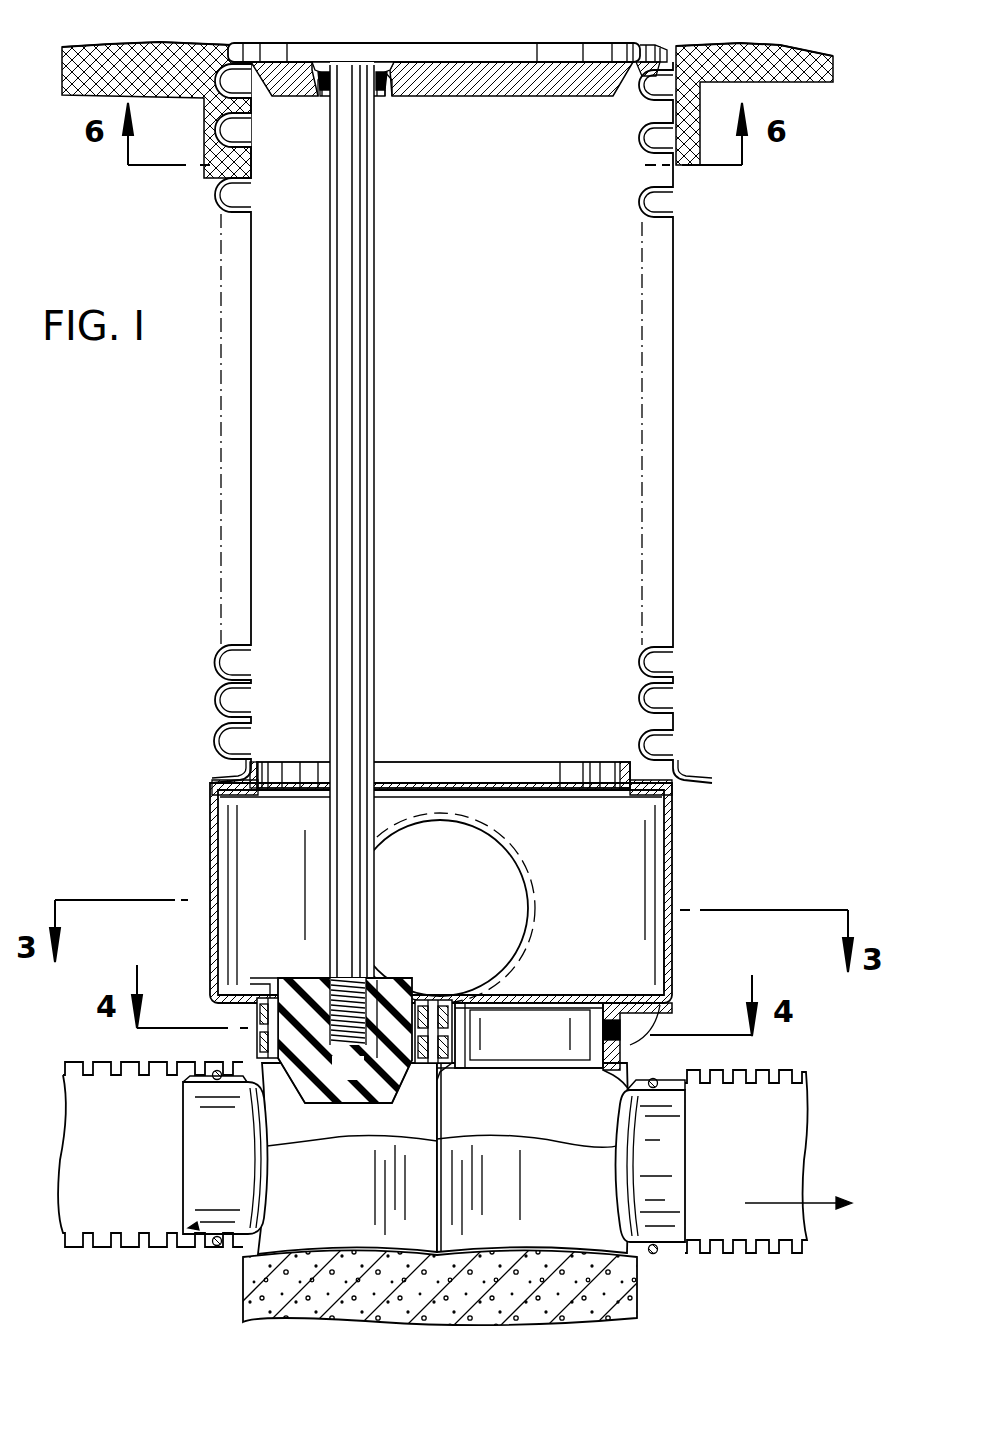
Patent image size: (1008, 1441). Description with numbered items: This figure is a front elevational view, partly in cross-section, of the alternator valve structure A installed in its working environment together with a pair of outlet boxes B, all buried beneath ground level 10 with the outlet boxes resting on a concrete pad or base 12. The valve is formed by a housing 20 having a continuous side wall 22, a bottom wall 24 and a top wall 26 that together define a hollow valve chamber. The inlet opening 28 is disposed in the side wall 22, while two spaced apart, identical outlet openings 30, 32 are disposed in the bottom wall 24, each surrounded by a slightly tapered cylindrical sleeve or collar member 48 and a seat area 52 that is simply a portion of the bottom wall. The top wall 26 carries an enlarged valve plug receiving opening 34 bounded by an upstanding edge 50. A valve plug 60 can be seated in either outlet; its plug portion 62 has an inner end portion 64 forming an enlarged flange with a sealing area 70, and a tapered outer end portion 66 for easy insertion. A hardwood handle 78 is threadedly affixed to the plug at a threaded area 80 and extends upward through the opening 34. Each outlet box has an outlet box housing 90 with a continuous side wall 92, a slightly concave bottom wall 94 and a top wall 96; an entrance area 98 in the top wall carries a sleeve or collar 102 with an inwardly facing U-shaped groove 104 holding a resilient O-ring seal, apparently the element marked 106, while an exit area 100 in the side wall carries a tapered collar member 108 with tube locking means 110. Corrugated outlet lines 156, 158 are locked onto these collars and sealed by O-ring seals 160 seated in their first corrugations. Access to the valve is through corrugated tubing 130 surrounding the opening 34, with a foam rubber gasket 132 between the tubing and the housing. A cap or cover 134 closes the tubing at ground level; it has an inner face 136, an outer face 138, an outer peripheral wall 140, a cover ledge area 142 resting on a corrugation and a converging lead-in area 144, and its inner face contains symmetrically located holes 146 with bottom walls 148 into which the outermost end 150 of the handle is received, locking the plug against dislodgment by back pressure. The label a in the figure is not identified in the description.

The ground level 10 is at (700, 46).
The concrete pad or base 12 is at (640, 1318).
The housing 20 is at (666, 968).
The continuous side wall 22 is at (668, 846).
The bottom wall 24 is at (622, 1000).
The top wall 26 is at (660, 796).
The inlet opening 28 is at (504, 920).
The outlet opening 30 is at (524, 1030).
The outlet opening 32 is at (280, 977).
The valve plug receiving opening 34 is at (434, 776).
The cylindrical sleeve or collar member 48 is at (474, 1030).
The upstanding edge 50 is at (633, 783).
The seat area 52 is at (440, 1000).
The valve plug 60 is at (320, 1092).
The plug portion 62 is at (362, 1079).
The inner end portion 64 is at (388, 978).
The outer end portion 66 is at (370, 1092).
The sealing area 70 is at (255, 978).
The handle 78 is at (370, 398).
The threaded area 80 is at (333, 1003).
The outlet box housing 90 is at (284, 1187).
The continuous side wall 92 is at (363, 1200).
The bottom wall 94 is at (305, 1258).
The top wall 96 is at (630, 1072).
The entrance area 98 is at (531, 1062).
The exit area 100 is at (658, 1179).
The hollow cylindrical sleeve or collar 102 is at (452, 1066).
The U-shaped groove 104 is at (648, 1012).
The gland seal 106 is at (622, 1032).
The cylindrical sleeve or collar member 108 is at (203, 1088).
The tube locking means 110 is at (195, 1226).
The corrugated tubing 130 is at (675, 215).
The gasket 132 is at (664, 790).
The cap or cover 134 is at (526, 53).
The inner face 136 is at (462, 97).
The outer face 138 is at (386, 46).
The outer peripheral wall 140 is at (262, 44).
The cover ledge area 142 is at (640, 62).
The converging peripheral lead-in area 144 is at (546, 84).
The holes or openings 146 is at (333, 92).
The bottom wall 148 is at (342, 62).
The outermost end 150 is at (374, 90).
The outlet line 156 is at (773, 1070).
The outlet line 158 is at (100, 1062).
The O-ring seals 160 is at (220, 1069).
The alternator valve structure A is at (212, 843).
The outlet boxes B is at (272, 1228).
The flow direction a is at (544, 1049).